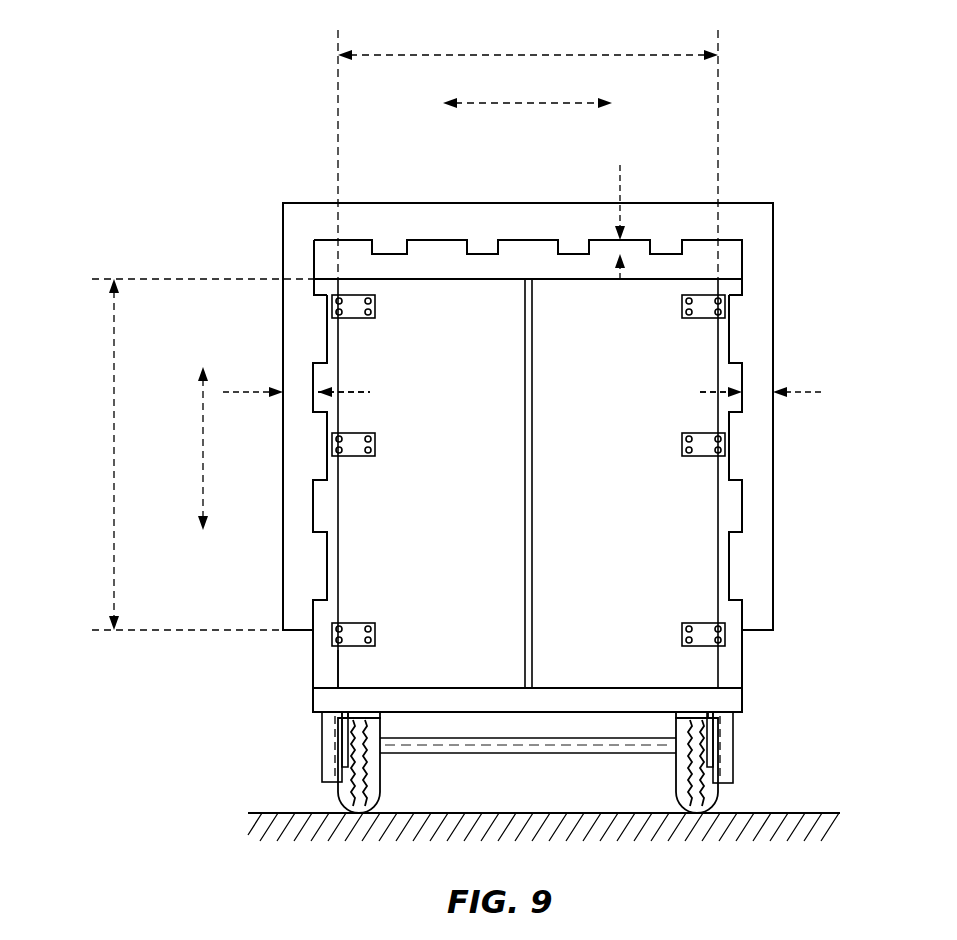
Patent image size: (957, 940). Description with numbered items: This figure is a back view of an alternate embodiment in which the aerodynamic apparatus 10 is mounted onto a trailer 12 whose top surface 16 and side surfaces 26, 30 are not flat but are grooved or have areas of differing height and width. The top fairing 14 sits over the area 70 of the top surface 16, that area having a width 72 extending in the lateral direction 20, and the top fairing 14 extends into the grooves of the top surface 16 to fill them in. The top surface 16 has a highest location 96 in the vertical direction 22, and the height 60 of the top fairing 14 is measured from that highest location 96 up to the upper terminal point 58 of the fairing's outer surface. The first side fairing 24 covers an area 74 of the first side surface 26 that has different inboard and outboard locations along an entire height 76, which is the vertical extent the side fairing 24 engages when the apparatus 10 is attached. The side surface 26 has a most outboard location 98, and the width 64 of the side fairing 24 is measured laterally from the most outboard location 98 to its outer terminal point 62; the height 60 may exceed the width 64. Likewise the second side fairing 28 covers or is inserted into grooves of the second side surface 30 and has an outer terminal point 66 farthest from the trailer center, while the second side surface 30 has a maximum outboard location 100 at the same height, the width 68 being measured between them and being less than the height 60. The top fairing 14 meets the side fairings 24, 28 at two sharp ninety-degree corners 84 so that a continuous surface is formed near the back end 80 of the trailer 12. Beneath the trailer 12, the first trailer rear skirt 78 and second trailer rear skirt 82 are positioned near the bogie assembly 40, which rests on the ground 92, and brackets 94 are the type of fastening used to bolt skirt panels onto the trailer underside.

The apparatus 10 is at (800, 244).
The trailer 12 is at (735, 670).
The top fairing 14 is at (470, 240).
The top surface 16 is at (518, 236).
The lateral direction 20 is at (530, 103).
The vertical direction 22 is at (203, 450).
The first side fairing 24 is at (292, 573).
The first side surface 26 is at (300, 644).
The second side fairing 28 is at (760, 557).
The second side surface 30 is at (755, 508).
The bogie assembly 40 is at (520, 755).
The upper terminal point 58 is at (620, 208).
The height 60 is at (620, 165).
The outer terminal point 62 is at (282, 388).
The width 64 is at (352, 393).
The outer terminal point 66 is at (774, 388).
The width 68 is at (702, 393).
The area 70 is at (430, 236).
The width 72 is at (530, 55).
The area 74 is at (300, 510).
The entire height 76 is at (114, 455).
The first trailer rear skirt 78 is at (322, 757).
The back end 80 is at (338, 664).
The second trailer rear skirt 82 is at (733, 757).
The corners 84 is at (283, 203).
The ground 92 is at (790, 813).
The brackets 94 is at (365, 712).
The highest location 96 is at (620, 243).
The most outboard location 98 is at (318, 388).
The maximum outboard location 100 is at (742, 390).